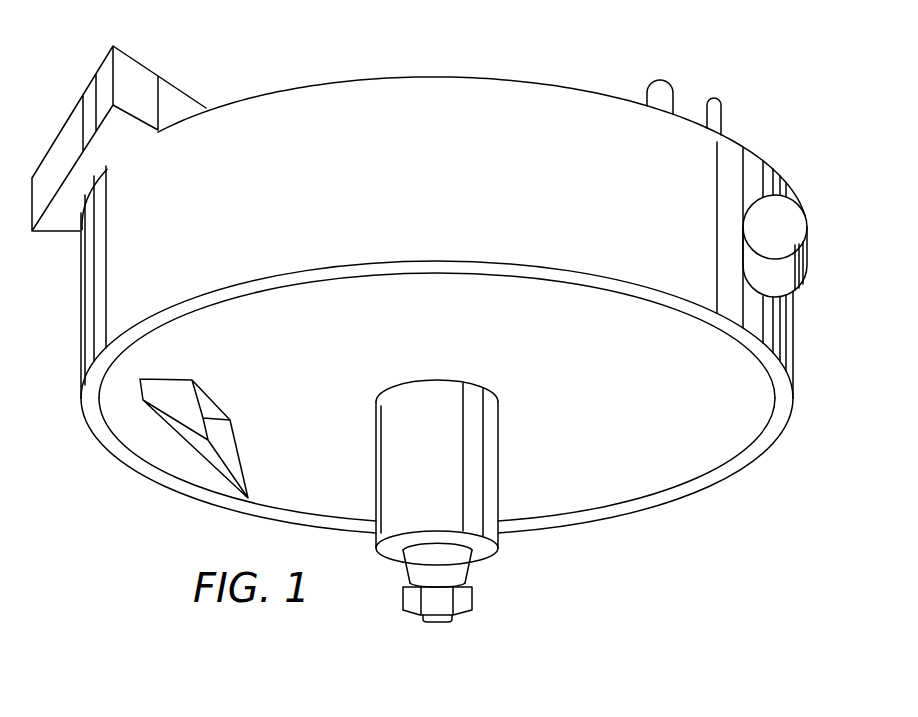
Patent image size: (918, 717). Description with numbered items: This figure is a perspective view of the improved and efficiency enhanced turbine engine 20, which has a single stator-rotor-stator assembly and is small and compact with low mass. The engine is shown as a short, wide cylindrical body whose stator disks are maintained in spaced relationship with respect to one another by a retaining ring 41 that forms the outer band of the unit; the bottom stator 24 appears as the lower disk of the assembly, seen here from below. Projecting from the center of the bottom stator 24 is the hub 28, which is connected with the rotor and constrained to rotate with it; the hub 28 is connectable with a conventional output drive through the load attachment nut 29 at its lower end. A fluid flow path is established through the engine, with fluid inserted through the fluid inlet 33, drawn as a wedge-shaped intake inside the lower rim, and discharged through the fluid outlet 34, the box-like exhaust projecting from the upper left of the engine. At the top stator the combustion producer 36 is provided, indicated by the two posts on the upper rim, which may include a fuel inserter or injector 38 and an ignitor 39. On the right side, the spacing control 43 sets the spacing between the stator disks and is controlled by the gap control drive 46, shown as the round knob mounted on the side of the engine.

The turbine engine 20 is at (305, 70).
The bottom stator 24 is at (722, 434).
The hub 28 is at (500, 533).
The load attachment nut 29 is at (472, 595).
The fluid inlet 33 is at (182, 440).
The fluid outlet 34 is at (136, 86).
The combustion producer 36 is at (687, 84).
The fuel inserter 38 is at (647, 90).
The ignitor 39 is at (720, 115).
The retaining ring 41 is at (427, 122).
The spacing control 43 is at (812, 308).
The gap control drive 46 is at (783, 228).